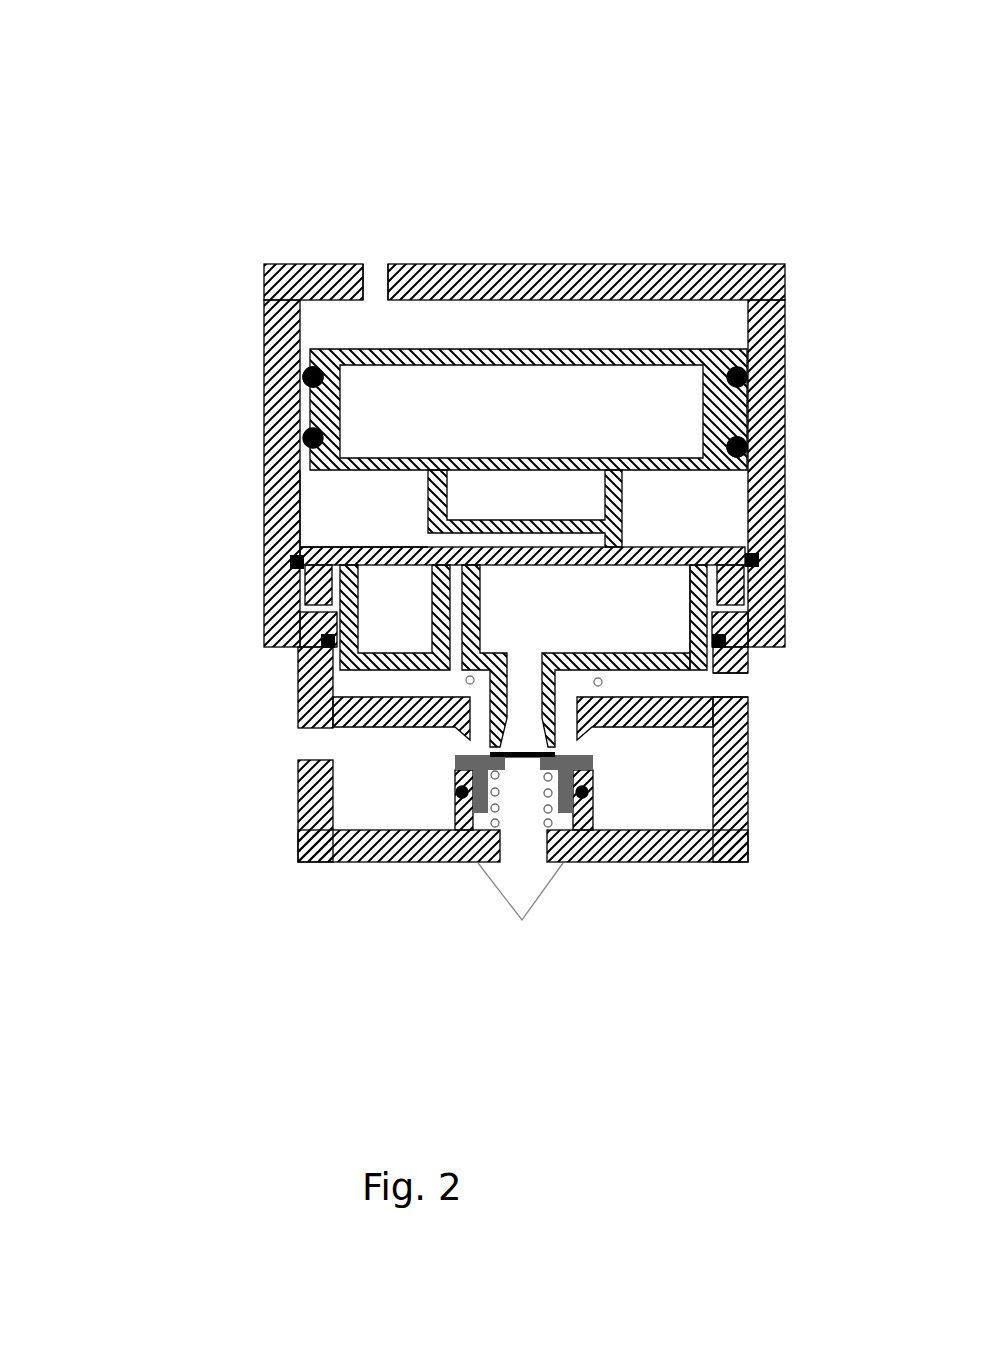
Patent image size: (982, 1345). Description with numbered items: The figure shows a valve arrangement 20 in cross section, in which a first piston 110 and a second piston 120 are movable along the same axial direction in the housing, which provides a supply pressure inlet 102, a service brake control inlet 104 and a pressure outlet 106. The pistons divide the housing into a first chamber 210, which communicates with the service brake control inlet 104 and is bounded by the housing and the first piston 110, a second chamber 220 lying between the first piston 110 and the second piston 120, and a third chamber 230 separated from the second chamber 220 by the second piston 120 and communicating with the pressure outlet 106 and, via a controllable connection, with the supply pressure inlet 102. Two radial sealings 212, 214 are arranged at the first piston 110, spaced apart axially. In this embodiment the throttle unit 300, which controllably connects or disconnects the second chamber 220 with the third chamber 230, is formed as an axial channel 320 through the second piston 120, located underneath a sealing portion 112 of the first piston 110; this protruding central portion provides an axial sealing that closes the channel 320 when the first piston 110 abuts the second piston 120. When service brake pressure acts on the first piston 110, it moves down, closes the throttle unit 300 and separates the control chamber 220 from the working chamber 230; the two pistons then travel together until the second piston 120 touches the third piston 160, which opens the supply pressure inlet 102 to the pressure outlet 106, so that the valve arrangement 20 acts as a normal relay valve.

The valve arrangement 20 is at (270, 56).
The supply pressure inlet 102 is at (307, 743).
The service brake control inlet 104 is at (372, 263).
The pressure outlet 106 is at (727, 680).
The first piston 110 is at (510, 352).
The sealing portion 112 is at (613, 517).
The second piston 120 is at (297, 560).
The third piston 160 is at (565, 815).
The first chamber 210 is at (727, 340).
The sealing 212 is at (262, 455).
The sealing 214 is at (525, 412).
The second chamber 220 is at (312, 502).
The third chamber 230 is at (388, 680).
The throttle unit 300 is at (455, 607).
The axial channel 320 is at (460, 573).